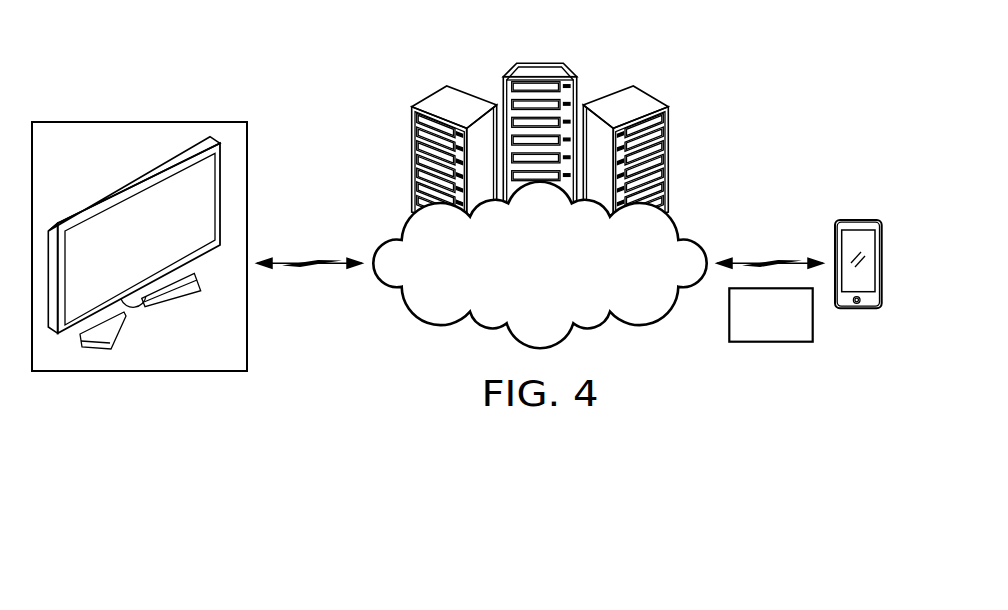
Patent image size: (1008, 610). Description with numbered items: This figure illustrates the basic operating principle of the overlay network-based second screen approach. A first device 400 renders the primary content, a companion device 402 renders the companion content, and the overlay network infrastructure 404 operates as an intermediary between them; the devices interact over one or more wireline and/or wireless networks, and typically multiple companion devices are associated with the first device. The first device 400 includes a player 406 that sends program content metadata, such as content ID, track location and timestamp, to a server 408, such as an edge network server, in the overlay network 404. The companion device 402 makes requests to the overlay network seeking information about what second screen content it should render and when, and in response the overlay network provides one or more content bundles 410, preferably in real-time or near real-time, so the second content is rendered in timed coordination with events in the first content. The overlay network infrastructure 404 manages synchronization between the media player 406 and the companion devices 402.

The first device 400 is at (138, 122).
The companion device 402 is at (857, 218).
The overlay network infrastructure 404 is at (517, 280).
The player 406 is at (162, 257).
The server 408 is at (540, 68).
The content bundles 410 is at (748, 328).